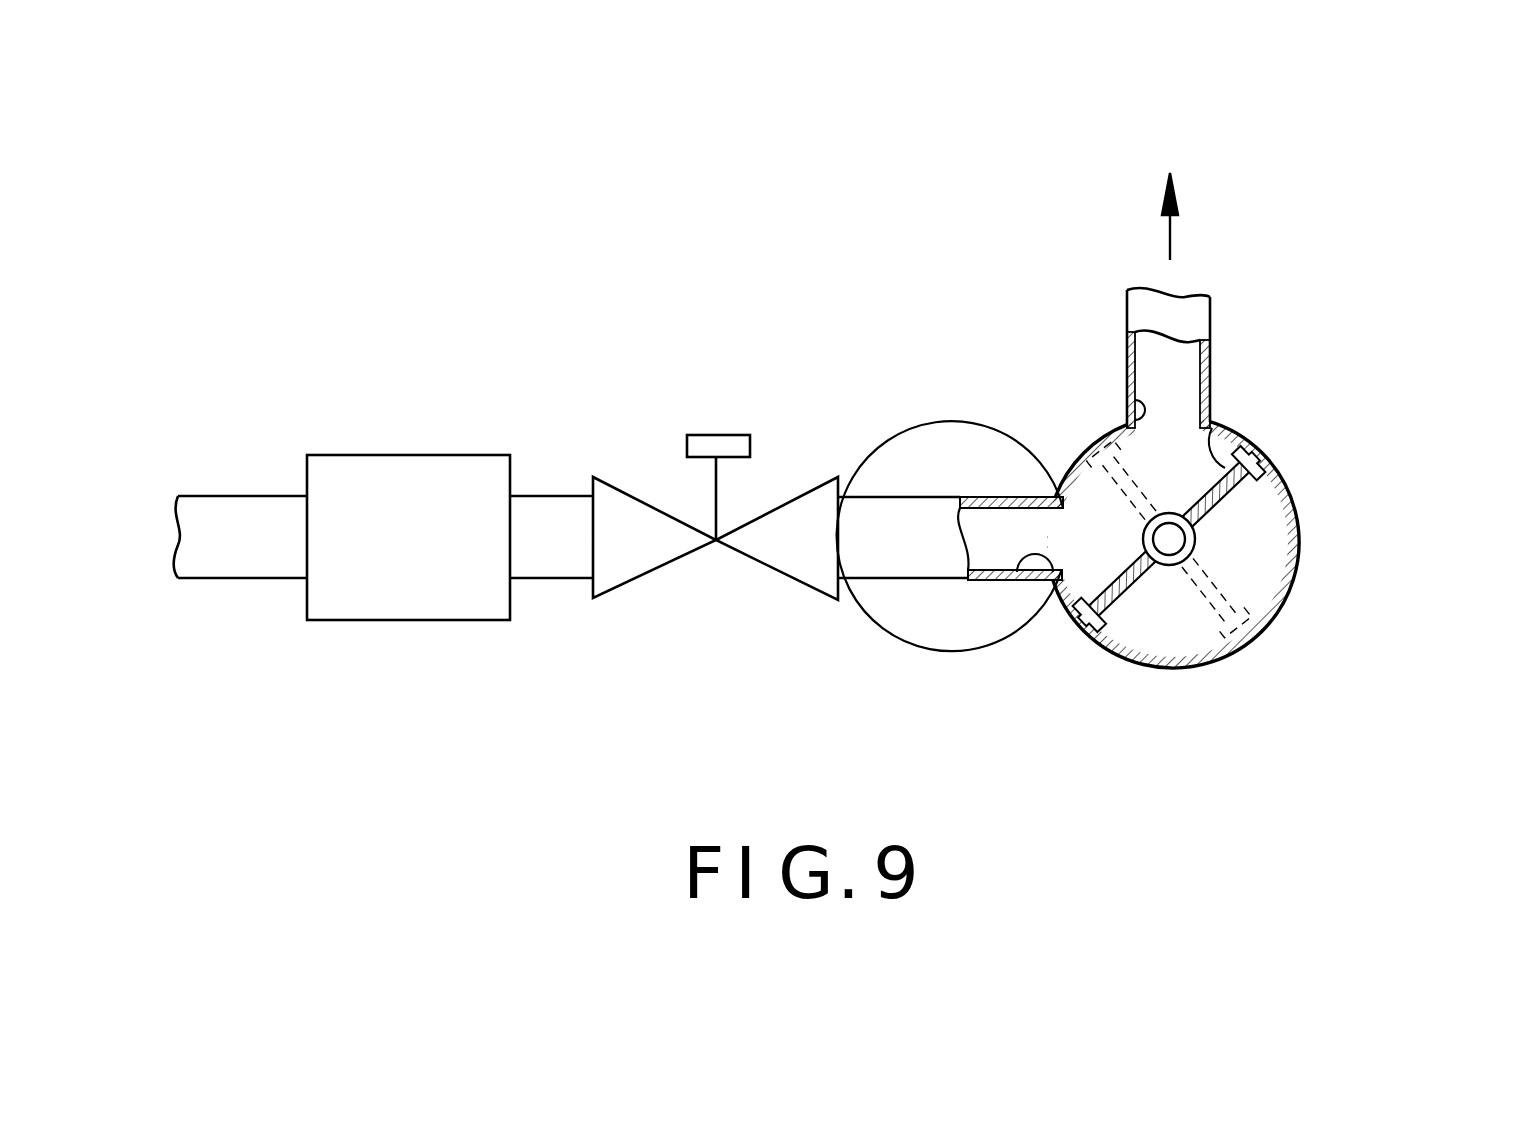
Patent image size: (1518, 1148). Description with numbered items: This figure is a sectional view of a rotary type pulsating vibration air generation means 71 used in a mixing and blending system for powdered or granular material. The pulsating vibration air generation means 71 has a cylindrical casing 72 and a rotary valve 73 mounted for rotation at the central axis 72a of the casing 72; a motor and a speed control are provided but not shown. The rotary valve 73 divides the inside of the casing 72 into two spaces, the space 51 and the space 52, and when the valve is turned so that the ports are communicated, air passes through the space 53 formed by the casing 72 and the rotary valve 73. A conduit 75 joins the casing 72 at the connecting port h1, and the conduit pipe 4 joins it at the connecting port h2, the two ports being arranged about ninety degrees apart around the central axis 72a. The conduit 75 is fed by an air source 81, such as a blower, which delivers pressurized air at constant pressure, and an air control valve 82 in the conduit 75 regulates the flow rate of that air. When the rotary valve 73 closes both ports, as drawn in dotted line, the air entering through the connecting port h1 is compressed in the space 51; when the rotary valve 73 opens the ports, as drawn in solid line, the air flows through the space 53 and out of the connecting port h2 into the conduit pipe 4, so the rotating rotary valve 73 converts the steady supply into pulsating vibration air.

The conduit pipe 4 is at (1197, 324).
The space S1 51 is at (1143, 623).
The space S2 52 is at (1295, 580).
The space S3 53 is at (1102, 515).
The pulsating vibration air generation means 71 is at (1169, 448).
The cylindrical casing 72 is at (1265, 450).
The central axis 72a is at (1172, 538).
The rotary valve 73 is at (1215, 420).
The conduit 75 is at (897, 518).
The air source 81 is at (400, 455).
The air control valve 82 is at (707, 435).
The connecting port h1 is at (1017, 557).
The connecting port h2 is at (1147, 403).